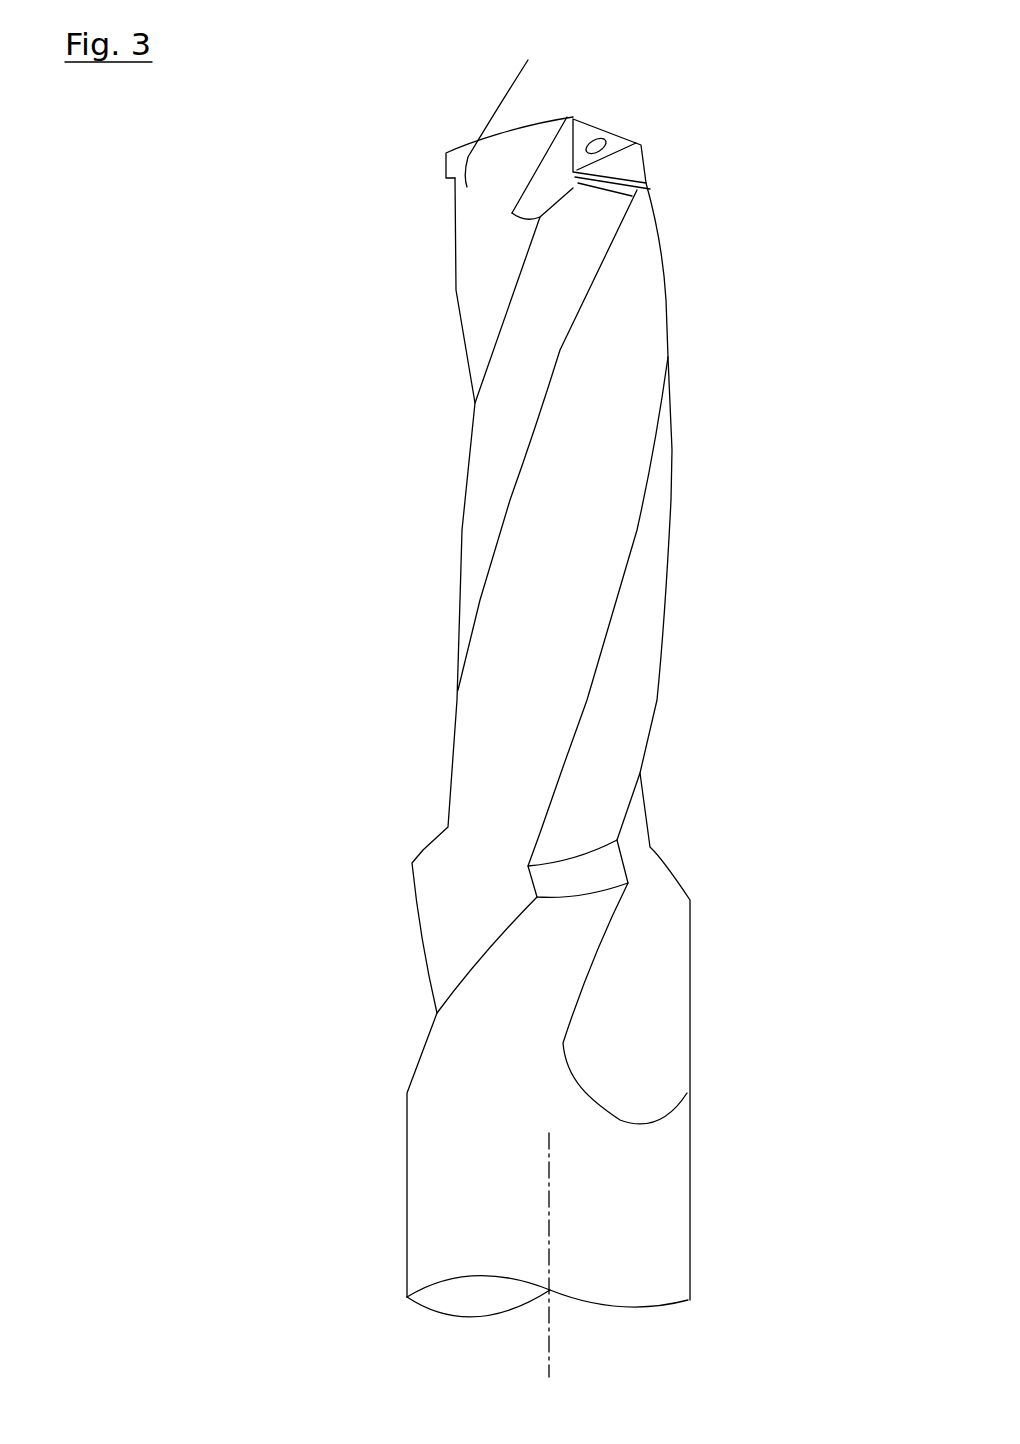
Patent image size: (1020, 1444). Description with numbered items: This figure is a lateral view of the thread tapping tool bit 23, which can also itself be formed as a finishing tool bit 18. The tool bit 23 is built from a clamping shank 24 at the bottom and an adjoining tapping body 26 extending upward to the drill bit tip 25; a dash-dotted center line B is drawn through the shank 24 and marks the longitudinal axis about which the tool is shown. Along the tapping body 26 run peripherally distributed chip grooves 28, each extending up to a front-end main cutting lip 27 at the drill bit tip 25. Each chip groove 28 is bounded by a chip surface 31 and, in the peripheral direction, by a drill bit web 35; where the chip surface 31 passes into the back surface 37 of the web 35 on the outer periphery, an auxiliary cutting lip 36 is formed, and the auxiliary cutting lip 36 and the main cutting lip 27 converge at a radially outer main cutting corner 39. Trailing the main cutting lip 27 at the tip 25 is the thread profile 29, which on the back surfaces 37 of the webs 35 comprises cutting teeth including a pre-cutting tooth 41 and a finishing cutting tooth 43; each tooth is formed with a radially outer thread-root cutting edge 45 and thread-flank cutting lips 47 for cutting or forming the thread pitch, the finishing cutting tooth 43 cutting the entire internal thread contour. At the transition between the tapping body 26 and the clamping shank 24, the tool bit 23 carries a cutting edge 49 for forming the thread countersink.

The finishing tool bit 18 is at (340, 1109).
The thread tapping tool bit 23 is at (326, 798).
The clamping shank 24 is at (660, 1188).
The drill bit tip 25 is at (567, 117).
The tapping body 26 is at (687, 634).
The front-end main cutting lip 27 is at (512, 213).
The chip groove 28 is at (486, 322).
The thread profile 29 is at (187, 147).
The chip surface 31 is at (529, 155).
The drill bit web 35 is at (446, 542).
The auxiliary cutting lip 36 is at (453, 248).
The back surface 37 is at (490, 457).
The main cutting corner 39 is at (647, 148).
The pre-cutting tooth 41 is at (290, 90).
The finishing cutting tooth 43 is at (637, 190).
The thread-root cutting edge 45 is at (446, 165).
The thread-flank cutting lip 47 is at (447, 154).
The cutting edge 49 is at (627, 854).
The drill axis B is at (549, 1335).